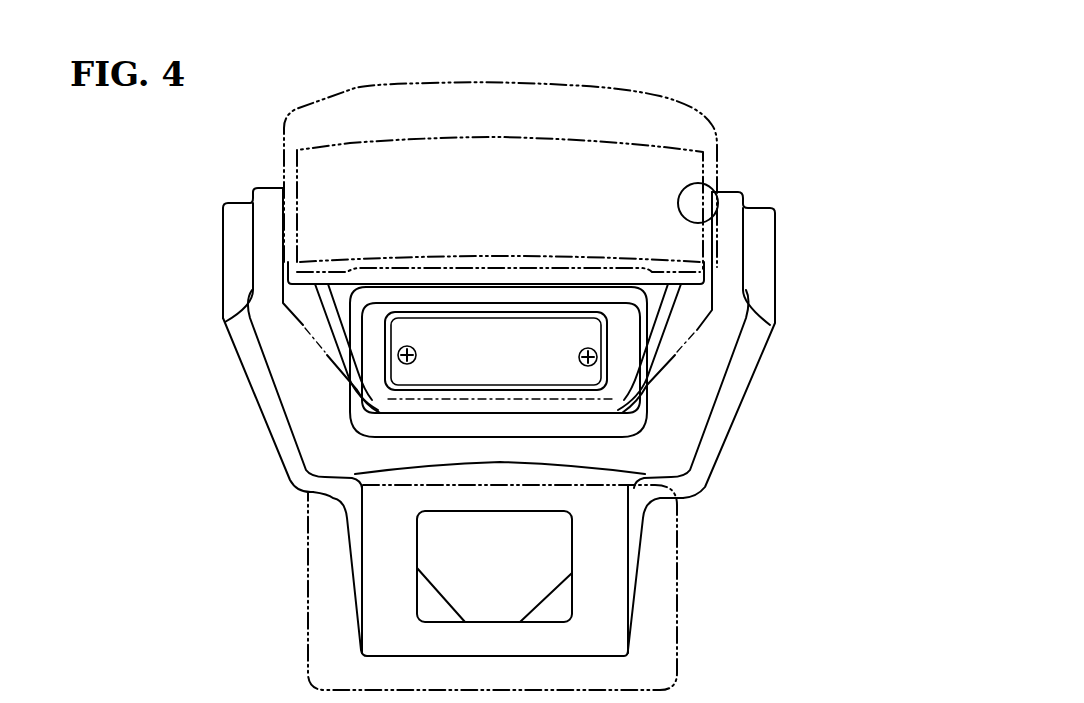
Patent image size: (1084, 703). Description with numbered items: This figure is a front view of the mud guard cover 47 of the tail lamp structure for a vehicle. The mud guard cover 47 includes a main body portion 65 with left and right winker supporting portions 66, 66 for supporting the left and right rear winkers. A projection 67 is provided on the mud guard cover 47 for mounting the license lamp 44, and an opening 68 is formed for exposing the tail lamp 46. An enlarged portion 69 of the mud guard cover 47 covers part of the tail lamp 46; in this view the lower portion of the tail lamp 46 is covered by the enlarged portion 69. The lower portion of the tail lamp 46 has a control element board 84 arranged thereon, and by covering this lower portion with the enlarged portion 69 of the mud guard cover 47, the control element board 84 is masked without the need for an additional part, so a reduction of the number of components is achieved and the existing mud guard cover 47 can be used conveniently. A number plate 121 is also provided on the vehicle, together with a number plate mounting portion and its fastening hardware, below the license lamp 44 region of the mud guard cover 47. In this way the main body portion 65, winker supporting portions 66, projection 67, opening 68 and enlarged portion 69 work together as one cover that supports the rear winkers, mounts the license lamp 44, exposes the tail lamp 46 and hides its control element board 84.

The license lamp 44 is at (485, 330).
The tail lamp 46 is at (730, 122).
The mud guard cover 47 is at (192, 253).
The main body portion 65 is at (702, 487).
The winker supporting portions 66 is at (222, 298).
The projection 67 is at (607, 347).
The opening 68 is at (703, 183).
The enlarged portion 69 is at (650, 398).
The control element board 84 is at (647, 307).
The number plate 121 is at (680, 575).